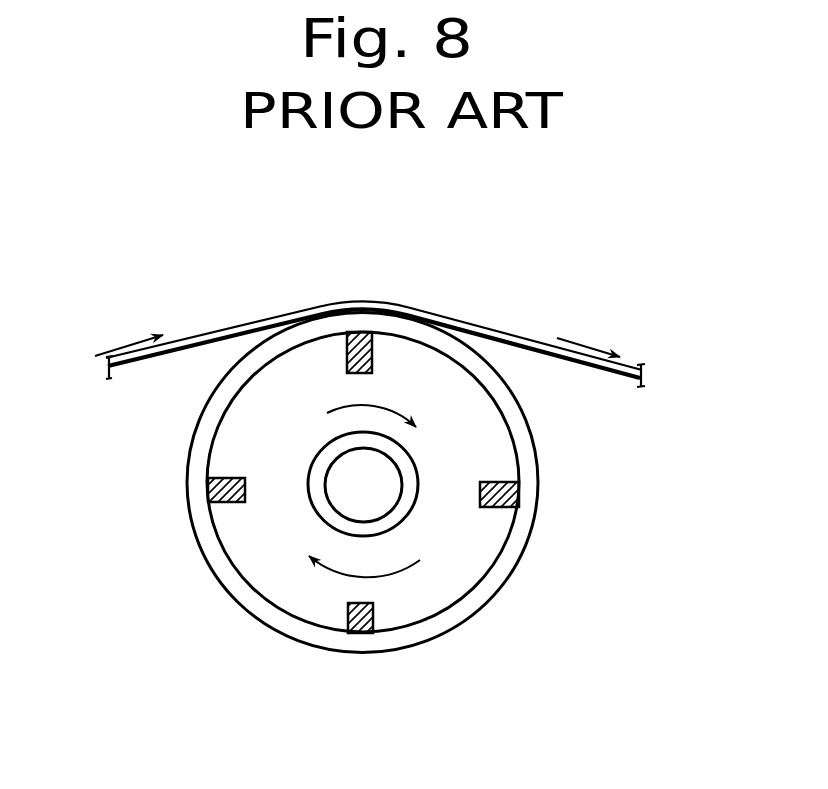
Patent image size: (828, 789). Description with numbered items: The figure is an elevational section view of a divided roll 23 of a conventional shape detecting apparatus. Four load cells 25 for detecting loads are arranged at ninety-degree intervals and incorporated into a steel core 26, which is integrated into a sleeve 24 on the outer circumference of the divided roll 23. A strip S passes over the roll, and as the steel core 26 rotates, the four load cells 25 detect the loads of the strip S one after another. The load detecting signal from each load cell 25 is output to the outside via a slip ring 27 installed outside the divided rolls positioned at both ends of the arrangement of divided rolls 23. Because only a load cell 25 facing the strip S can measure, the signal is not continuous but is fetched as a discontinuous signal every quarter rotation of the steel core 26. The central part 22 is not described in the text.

The strip S is at (513, 337).
The shaft 22 is at (337, 501).
The divided roll 23 is at (386, 507).
The sleeve 24 is at (530, 476).
The load cell 25 is at (370, 360).
The steel core 26 is at (227, 432).
The slip ring 27 is at (400, 510).